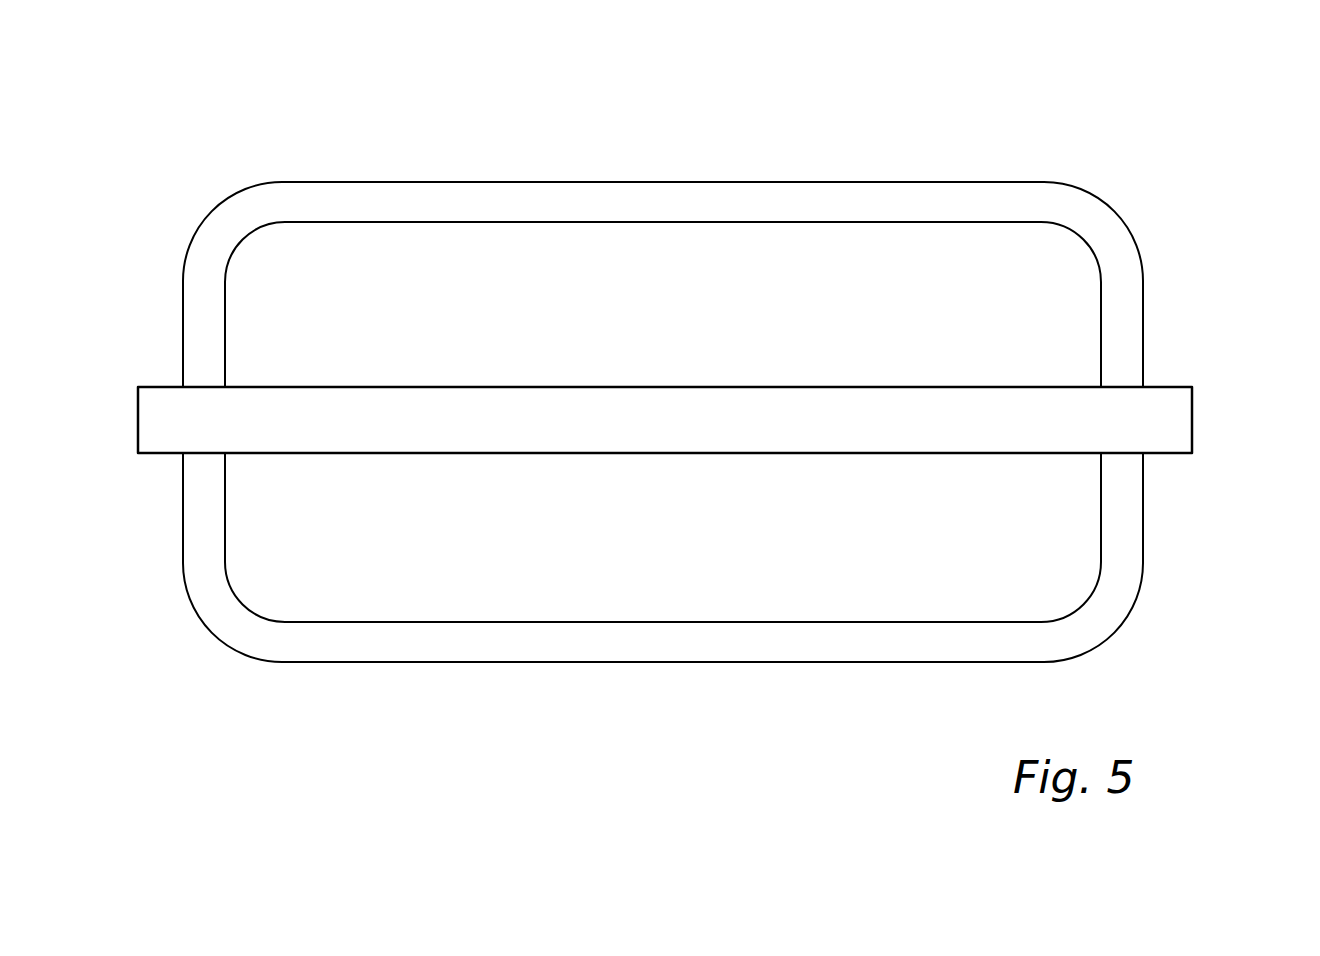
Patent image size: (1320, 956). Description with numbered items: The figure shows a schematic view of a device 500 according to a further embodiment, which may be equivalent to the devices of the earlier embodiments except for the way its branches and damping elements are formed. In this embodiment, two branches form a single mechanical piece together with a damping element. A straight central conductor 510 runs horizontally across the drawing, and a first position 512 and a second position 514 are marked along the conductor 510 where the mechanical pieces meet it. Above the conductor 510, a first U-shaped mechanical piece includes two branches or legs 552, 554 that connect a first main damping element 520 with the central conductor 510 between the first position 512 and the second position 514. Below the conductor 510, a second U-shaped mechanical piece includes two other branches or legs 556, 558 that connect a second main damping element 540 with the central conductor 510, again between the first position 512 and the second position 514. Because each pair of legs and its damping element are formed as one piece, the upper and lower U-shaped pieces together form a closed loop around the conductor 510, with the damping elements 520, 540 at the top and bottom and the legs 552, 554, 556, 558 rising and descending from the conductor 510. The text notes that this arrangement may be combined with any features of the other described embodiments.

The device 500 is at (205, 143).
The central conductor 510 is at (1193, 411).
The first position 512 is at (199, 408).
The second position 514 is at (1128, 407).
The first main damping element 520 is at (725, 203).
The second main damping element 540 is at (892, 642).
The branch or leg 552 is at (208, 303).
The branch or leg 554 is at (1112, 325).
The branch or leg 556 is at (207, 524).
The branch or leg 558 is at (1112, 530).